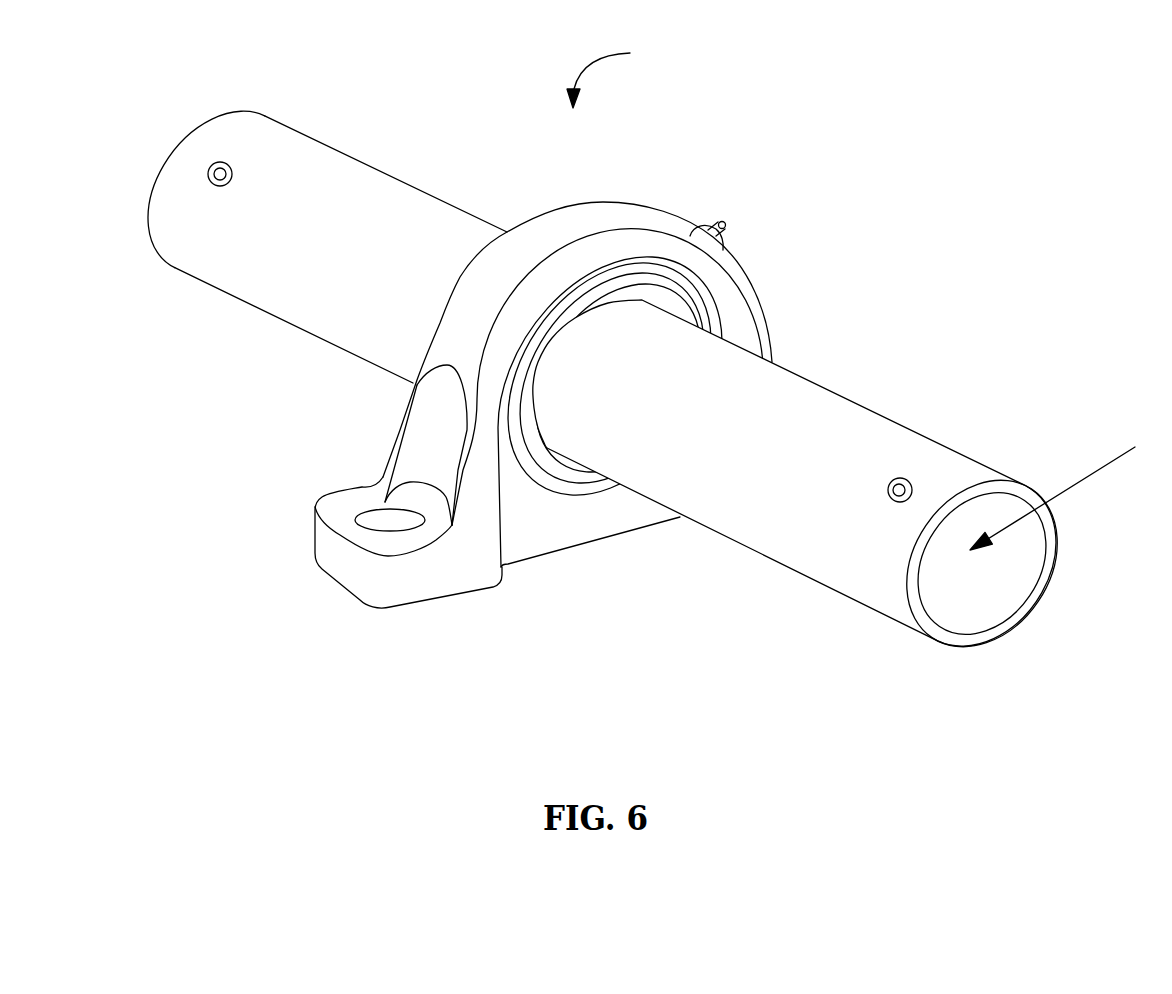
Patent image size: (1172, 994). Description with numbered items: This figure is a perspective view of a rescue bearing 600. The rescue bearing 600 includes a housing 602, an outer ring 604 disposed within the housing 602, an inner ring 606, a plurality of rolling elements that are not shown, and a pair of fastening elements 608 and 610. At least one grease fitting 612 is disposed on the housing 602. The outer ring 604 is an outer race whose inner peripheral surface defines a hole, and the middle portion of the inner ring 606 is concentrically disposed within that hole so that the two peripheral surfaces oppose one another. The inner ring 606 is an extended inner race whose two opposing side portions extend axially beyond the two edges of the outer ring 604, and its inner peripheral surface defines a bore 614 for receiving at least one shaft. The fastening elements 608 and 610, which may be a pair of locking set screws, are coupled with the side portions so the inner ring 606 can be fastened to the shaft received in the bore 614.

The rescue bearing 600 is at (622, 75).
The housing 602 is at (618, 213).
The outer ring 604 is at (677, 307).
The inner ring 606 is at (767, 387).
The fastening element 608 is at (913, 493).
The fastening element 610 is at (230, 168).
The grease fitting 612 is at (725, 223).
The bore 614 is at (1039, 512).